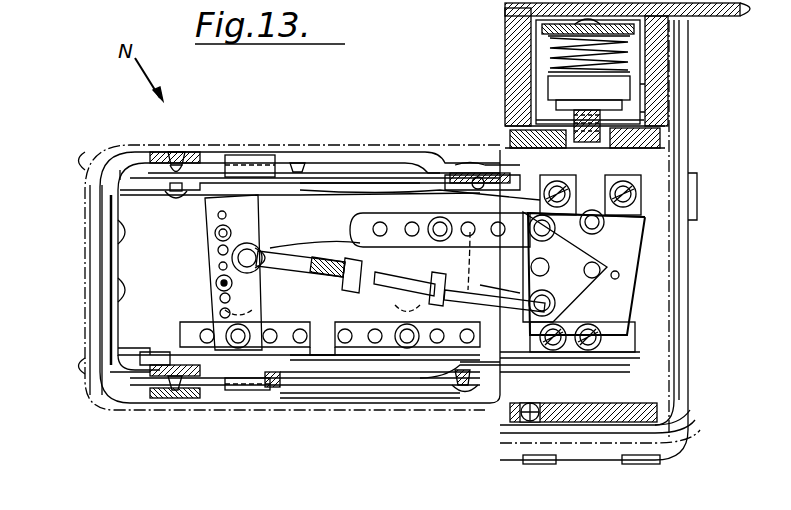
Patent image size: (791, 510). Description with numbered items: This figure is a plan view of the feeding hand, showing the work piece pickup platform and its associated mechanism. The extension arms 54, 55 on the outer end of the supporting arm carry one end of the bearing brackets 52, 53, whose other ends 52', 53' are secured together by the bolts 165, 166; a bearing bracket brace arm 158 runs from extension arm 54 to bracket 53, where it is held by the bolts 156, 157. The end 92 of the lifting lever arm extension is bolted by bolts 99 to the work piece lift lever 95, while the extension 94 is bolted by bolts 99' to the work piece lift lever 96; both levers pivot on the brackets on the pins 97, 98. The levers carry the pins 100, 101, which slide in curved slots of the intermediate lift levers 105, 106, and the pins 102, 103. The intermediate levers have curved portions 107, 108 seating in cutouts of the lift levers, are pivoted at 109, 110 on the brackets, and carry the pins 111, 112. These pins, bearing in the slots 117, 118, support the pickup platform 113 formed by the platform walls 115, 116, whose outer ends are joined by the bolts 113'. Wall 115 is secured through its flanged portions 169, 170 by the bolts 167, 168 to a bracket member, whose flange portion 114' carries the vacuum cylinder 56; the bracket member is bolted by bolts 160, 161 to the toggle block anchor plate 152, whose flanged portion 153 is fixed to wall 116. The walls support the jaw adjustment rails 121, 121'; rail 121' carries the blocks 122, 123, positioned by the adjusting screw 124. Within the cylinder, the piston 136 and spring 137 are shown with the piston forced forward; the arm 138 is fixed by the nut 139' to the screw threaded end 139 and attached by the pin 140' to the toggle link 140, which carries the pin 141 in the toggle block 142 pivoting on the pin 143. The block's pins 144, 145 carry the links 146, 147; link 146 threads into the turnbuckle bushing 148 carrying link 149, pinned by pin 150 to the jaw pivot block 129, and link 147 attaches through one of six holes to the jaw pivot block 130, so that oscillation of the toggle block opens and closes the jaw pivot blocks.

The bearing bracket 52 is at (315, 140).
The other end of bearing bracket 52' is at (61, 290).
The bearing bracket 53 is at (305, 430).
The other end of bearing bracket 53' is at (61, 302).
The extension arm 54 is at (668, 32).
The extension arm 55 is at (506, 26).
The vacuum cylinder 56 is at (641, 46).
The end of extension 92 is at (660, 422).
The extension 94 is at (665, 130).
The work piece lift lever 95 is at (375, 382).
The work piece lift lever 96 is at (436, 166).
The pin 97 is at (478, 393).
The pin 98 is at (466, 172).
The bolts 99 is at (569, 451).
The bolts 99' is at (487, 134).
The pin 100 is at (312, 386).
The pin 101 is at (297, 162).
The pin 102 is at (165, 357).
The pin 103 is at (160, 180).
The intermediate lift lever 105 is at (343, 380).
The intermediate lift lever 106 is at (398, 176).
The curved portion 107 is at (250, 156).
The curved portion 108 is at (246, 392).
The pivot 109 is at (176, 400).
The pivot 110 is at (176, 152).
The pin 111 is at (467, 261).
The pin 112 is at (442, 396).
The pickup platform 113 is at (66, 259).
The bolts 113' is at (73, 261).
The vertically extending flange portion 114' is at (651, 101).
The platform wall 115 is at (118, 172).
The platform wall 116 is at (120, 368).
The slot 117 is at (425, 190).
The slot 118 is at (180, 192).
The jaw adjustment rail 121 is at (300, 214).
The jaw adjustment rail 121' is at (82, 339).
The block 122 is at (462, 306).
The block 123 is at (178, 322).
The adjusting screw 124 is at (117, 373).
The jaw pivot block 129 is at (215, 233).
The jaw pivot block 130 is at (365, 243).
The piston 136 is at (622, 84).
The spring 137 is at (560, 47).
The arm 138 is at (652, 146).
The screw threaded end 139 is at (650, 121).
The nut 139' is at (589, 96).
The toggle link 140 is at (636, 274).
The pin 140' is at (639, 221).
The pin 141 is at (610, 268).
The toggle block 142 is at (615, 302).
The pin 143 is at (532, 266).
The pin 144 is at (530, 312).
The pin 145 is at (578, 248).
The link 146 is at (500, 292).
The link 147 is at (368, 233).
The turnbuckle bushing 148 is at (360, 290).
The link 149 is at (288, 270).
The pin 150 is at (240, 259).
The toggle block anchor plate 152 is at (640, 342).
The vertically extending flanged portion 153 is at (632, 364).
The bolt 156 is at (547, 465).
The bolt 157 is at (640, 465).
The bearing bracket brace arm 158 is at (689, 312).
The bolt 160 is at (550, 352).
The bolt 161 is at (592, 352).
The bolt 165 is at (78, 368).
The bolt 166 is at (80, 160).
The bolt 167 is at (566, 197).
The bolt 168 is at (636, 201).
The flanged portion 169 is at (485, 180).
The flanged portion 170 is at (640, 182).